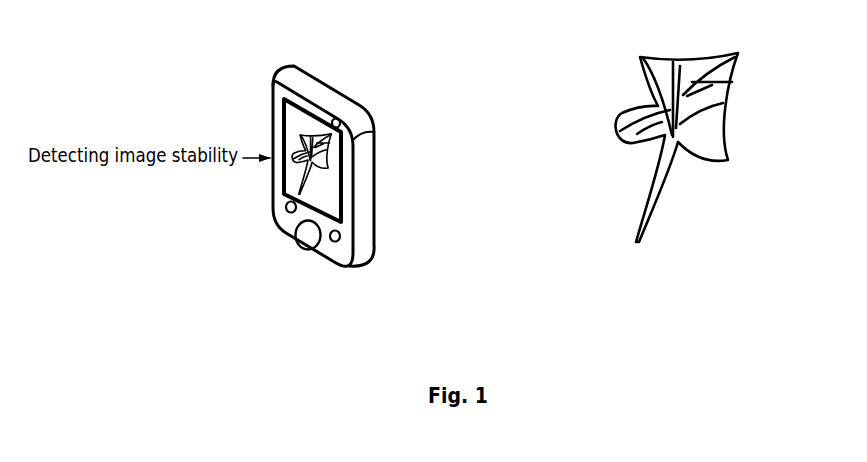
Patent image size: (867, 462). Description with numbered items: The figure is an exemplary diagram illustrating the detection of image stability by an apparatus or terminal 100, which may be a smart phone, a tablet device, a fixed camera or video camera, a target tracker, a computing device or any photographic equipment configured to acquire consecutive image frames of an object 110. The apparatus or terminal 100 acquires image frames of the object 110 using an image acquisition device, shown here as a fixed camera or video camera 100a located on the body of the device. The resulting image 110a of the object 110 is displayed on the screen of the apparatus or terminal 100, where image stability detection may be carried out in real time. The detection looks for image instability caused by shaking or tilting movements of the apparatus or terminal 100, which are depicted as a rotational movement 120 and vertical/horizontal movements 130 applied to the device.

The apparatus or terminal 100 is at (438, 310).
The video camera 100a is at (340, 126).
The object 110 is at (753, 300).
The image 110a is at (335, 169).
The rotational movement 120 is at (261, 92).
The vertical/horizontal movement 130 is at (358, 83).